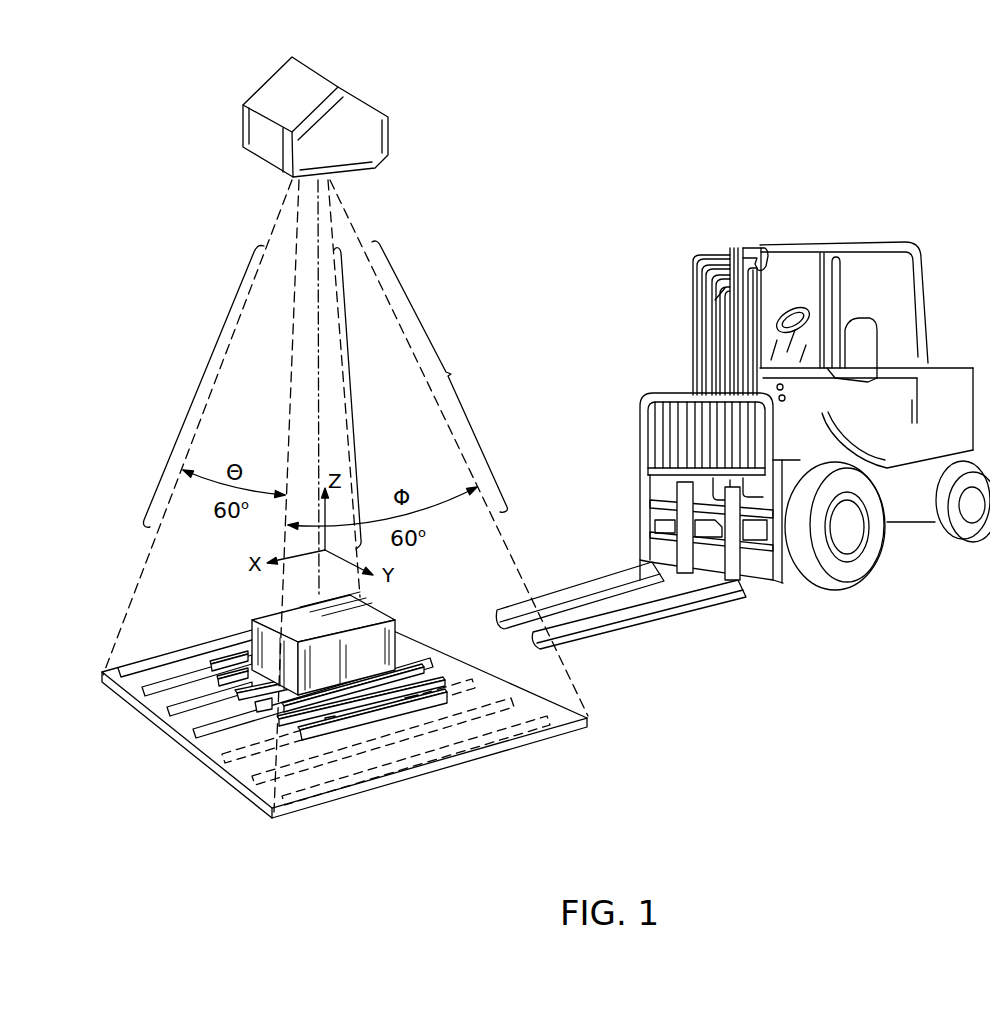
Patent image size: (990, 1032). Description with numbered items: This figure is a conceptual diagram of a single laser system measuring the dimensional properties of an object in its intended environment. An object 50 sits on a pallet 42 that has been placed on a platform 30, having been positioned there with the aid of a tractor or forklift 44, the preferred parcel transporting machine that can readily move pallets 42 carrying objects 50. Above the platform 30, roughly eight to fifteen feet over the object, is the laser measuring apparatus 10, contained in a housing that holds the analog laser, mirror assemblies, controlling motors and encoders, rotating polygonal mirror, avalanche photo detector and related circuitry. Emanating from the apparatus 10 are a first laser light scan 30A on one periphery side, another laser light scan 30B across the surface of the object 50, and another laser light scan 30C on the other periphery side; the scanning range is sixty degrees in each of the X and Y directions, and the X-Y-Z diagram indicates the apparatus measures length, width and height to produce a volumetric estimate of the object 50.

The laser measuring apparatus 10 is at (374, 98).
The platform 30 is at (228, 745).
The first laser light scan 30A is at (459, 448).
The laser light scan of the surface of the object 30B is at (345, 496).
The laser light scan on the other periphery side 30C is at (197, 427).
The pallet 42 is at (437, 703).
The forklift 44 is at (924, 212).
The object 50 is at (265, 650).